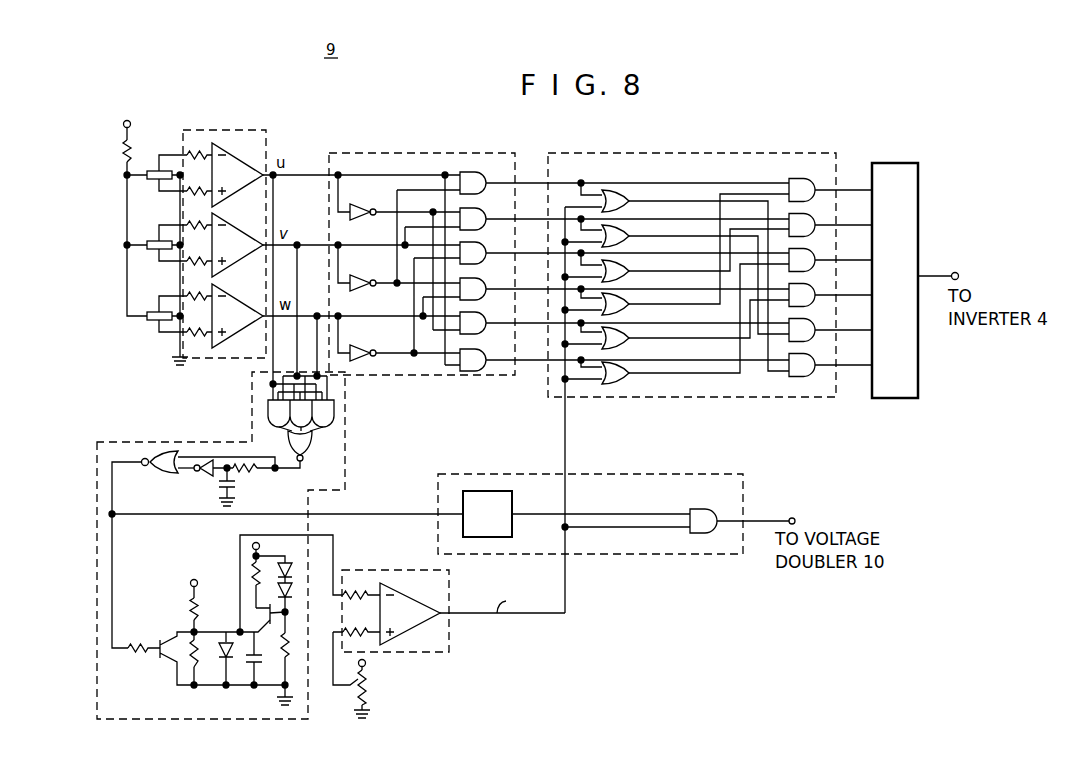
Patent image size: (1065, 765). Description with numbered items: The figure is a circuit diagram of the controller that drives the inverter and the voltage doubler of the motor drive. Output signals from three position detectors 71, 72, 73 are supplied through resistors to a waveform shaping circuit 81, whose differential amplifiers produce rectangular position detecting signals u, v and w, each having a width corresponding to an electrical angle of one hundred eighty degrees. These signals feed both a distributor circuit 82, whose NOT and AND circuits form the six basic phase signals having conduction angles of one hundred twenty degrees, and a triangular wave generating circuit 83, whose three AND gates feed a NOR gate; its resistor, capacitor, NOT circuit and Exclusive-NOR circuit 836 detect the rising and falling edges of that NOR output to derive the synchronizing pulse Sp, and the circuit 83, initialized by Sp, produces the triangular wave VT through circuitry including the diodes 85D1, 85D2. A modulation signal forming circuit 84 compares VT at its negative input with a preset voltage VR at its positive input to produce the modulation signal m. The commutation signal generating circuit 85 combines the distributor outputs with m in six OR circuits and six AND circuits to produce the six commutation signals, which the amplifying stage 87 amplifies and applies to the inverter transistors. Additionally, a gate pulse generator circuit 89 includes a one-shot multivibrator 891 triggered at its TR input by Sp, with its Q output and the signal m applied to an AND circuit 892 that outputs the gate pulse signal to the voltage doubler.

The detector 71 is at (152, 171).
The detector 72 is at (152, 241).
The detector 73 is at (152, 312).
The waveform shaping circuit 81 is at (240, 130).
The distributor circuit 82 is at (436, 148).
The triangular wave generating circuit 83 is at (280, 447).
The modulation signal forming circuit 84 is at (432, 653).
The commutation signal generating circuit 85 is at (686, 148).
The amplifying stage 87 is at (897, 163).
The gate pulse generator circuit 89 is at (616, 502).
The Exclusive-NOR circuit 836 is at (168, 470).
The one-shot multivibrator 891 is at (493, 491).
The AND circuit 892 is at (700, 530).
The diode 85D1 is at (290, 568).
The diode 85D2 is at (288, 590).